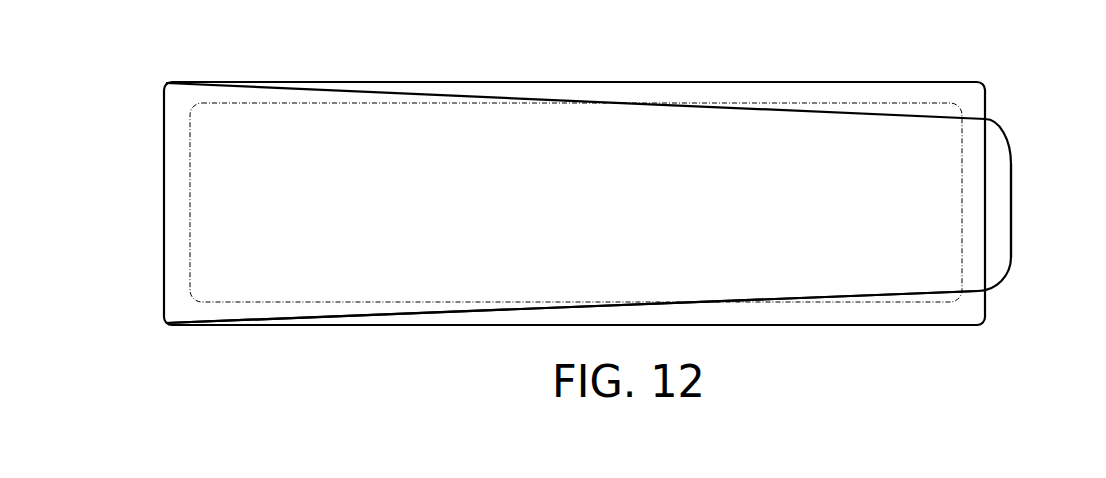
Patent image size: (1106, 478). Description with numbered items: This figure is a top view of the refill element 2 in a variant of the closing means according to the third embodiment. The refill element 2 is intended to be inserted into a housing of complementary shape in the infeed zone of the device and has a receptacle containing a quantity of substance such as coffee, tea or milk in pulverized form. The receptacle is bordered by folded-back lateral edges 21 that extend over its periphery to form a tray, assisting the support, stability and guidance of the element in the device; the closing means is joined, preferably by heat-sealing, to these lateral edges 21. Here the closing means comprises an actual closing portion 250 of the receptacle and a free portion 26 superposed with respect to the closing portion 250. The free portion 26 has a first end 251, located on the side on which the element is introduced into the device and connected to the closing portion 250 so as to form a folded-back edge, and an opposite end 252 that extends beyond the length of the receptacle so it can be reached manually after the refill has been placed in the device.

The refill element 2 is at (995, 77).
The lateral edges 21 is at (845, 312).
The free portion 26 is at (1002, 243).
The closing portion 250 is at (922, 317).
The first end 251 is at (177, 283).
The opposite end 252 is at (997, 198).